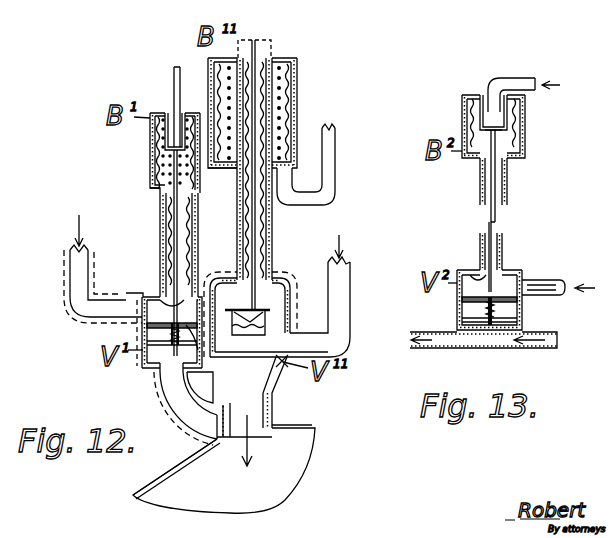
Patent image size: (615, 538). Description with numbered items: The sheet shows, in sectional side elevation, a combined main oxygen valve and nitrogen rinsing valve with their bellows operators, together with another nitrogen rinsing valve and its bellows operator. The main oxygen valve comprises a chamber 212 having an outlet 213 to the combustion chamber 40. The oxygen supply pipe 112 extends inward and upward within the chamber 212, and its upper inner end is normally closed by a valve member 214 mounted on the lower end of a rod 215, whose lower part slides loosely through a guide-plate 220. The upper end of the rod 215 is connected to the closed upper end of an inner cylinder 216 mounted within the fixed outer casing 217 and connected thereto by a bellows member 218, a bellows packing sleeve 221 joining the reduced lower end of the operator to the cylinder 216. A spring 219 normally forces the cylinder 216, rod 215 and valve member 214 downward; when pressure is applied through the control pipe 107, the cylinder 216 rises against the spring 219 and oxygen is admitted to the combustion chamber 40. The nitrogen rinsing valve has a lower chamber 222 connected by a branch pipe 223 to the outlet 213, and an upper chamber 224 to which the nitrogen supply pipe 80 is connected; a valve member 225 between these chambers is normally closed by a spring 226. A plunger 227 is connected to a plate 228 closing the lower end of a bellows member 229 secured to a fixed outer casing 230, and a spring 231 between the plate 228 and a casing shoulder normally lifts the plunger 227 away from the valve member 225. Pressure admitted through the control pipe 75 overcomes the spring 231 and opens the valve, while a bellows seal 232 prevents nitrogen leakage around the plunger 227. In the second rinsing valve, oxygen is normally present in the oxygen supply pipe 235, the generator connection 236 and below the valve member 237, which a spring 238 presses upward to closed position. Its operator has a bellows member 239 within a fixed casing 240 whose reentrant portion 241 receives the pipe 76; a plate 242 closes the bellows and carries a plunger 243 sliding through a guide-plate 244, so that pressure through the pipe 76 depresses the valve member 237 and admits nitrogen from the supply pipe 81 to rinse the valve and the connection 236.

In FIG. 12, the inner cylinder 216 is at (258, 41).
In FIG. 12, the outer casing 217 is at (297, 62).
In FIG. 12, the bellows member 218 is at (297, 90).
In FIG. 12, the spring 219 is at (280, 109).
In FIG. 12, the rod 215 is at (267, 218).
In FIG. 12, the bellows packing sleeve 221 is at (260, 248).
In FIG. 12, the bellows member 229 is at (225, 168).
In FIG. 12, the control pipe 107 is at (331, 166).
In FIG. 12, the outer casing 230 is at (150, 177).
In FIG. 12, the plate 228 is at (166, 154).
In FIG. 12, the control pipe 75 is at (174, 75).
In FIG. 12, the spring 231 is at (155, 188).
In FIG. 12, the bellows seal 232 is at (186, 222).
In FIG. 12, the plunger 227 is at (174, 246).
In FIG. 12, the nitrogen supply pipe 80 is at (72, 275).
In FIG. 12, the upper chamber 224 is at (160, 295).
In FIG. 12, the valve member 225 is at (140, 322).
In FIG. 12, the lower chamber 222 is at (158, 368).
In FIG. 12, the spring 226 is at (195, 405).
In FIG. 12, the branch pipe 223 is at (188, 412).
In FIG. 12, the guide-plate 220 is at (286, 282).
In FIG. 12, the chamber 212 is at (279, 306).
In FIG. 12, the valve member 214 is at (246, 313).
In FIG. 12, the oxygen supply pipe 112 is at (340, 288).
In FIG. 12, the outlet 213 is at (262, 404).
In FIG. 12, the combustion chamber 40 is at (308, 455).
In FIG. 13, the fixed casing 240 is at (462, 108).
In FIG. 13, the reentrant portion 241 is at (512, 106).
In FIG. 13, the bellows member 239 is at (509, 129).
In FIG. 13, the pipe 76 is at (510, 80).
In FIG. 13, the plate 242 is at (503, 140).
In FIG. 13, the plunger 243 is at (497, 218).
In FIG. 13, the guide-plate 244 is at (480, 268).
In FIG. 13, the valve member 237 is at (498, 290).
In FIG. 13, the spring 238 is at (505, 311).
In FIG. 13, the supply pipe 81 is at (548, 280).
In FIG. 13, the generator connection 236 is at (457, 320).
In FIG. 13, the oxygen supply pipe 235 is at (557, 341).